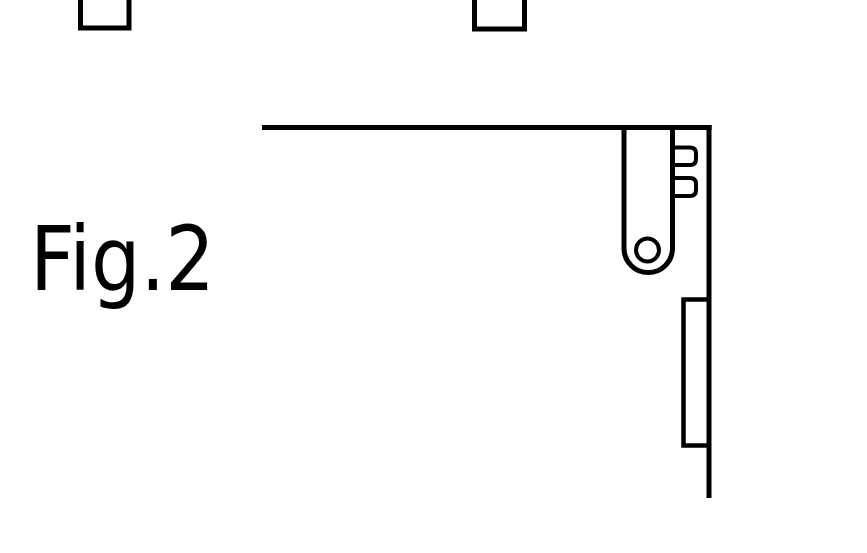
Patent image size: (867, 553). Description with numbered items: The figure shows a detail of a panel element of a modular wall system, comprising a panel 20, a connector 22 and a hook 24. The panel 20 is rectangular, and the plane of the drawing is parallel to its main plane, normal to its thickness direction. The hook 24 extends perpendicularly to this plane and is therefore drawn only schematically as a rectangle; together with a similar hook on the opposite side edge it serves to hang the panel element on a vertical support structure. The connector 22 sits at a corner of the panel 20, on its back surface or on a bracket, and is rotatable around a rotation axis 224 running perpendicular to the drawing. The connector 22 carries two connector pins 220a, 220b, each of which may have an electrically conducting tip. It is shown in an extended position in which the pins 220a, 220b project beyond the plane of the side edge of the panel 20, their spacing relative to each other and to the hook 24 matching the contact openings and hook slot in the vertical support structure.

The panel 20 is at (298, 125).
The connector 22 is at (645, 148).
The connector pin 220a is at (697, 150).
The connector pin 220b is at (699, 190).
The rotation axis 224 is at (643, 248).
The hook 24 is at (710, 378).